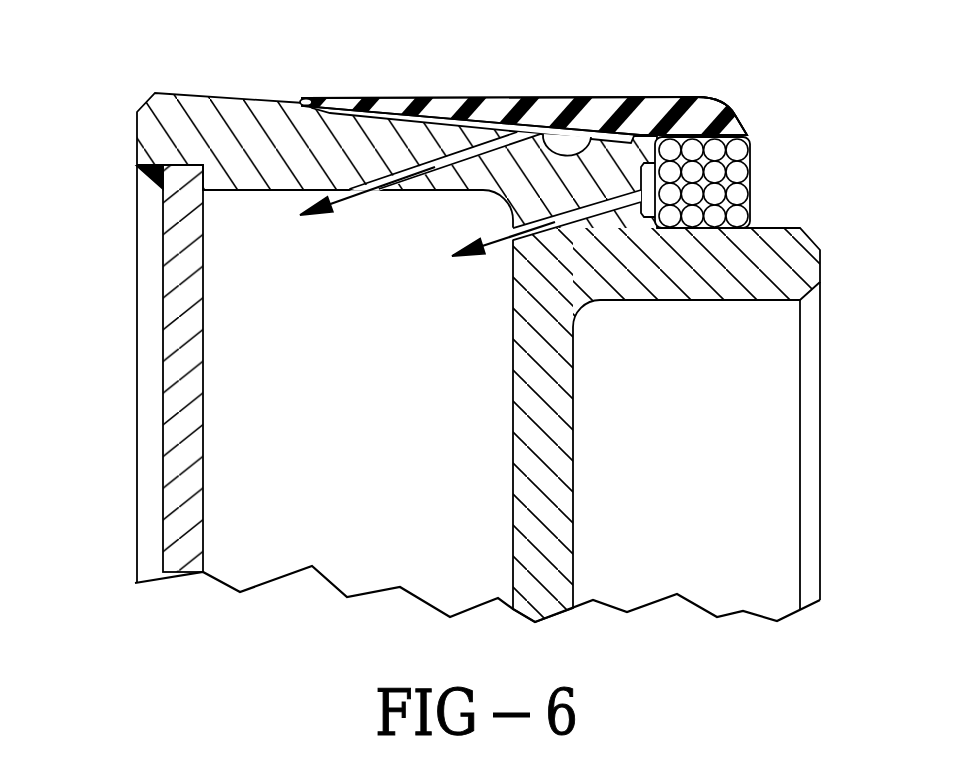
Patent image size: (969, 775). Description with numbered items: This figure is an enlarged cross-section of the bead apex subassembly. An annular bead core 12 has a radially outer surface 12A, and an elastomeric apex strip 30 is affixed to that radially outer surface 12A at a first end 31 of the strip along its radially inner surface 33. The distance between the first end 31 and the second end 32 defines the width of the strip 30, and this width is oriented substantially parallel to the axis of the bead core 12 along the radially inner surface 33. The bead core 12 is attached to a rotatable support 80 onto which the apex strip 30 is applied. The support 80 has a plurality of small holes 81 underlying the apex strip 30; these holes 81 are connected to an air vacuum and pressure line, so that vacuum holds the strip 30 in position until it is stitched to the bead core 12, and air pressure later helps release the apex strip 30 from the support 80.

The bead core 12 is at (737, 194).
The radially outer surface 12A is at (752, 168).
The apex strip 30 is at (447, 97).
The first end 31 is at (734, 124).
The second end 32 is at (306, 102).
The radially inner surface 33 is at (592, 142).
The rotatable support 80 is at (162, 292).
The holes 81 is at (414, 178).